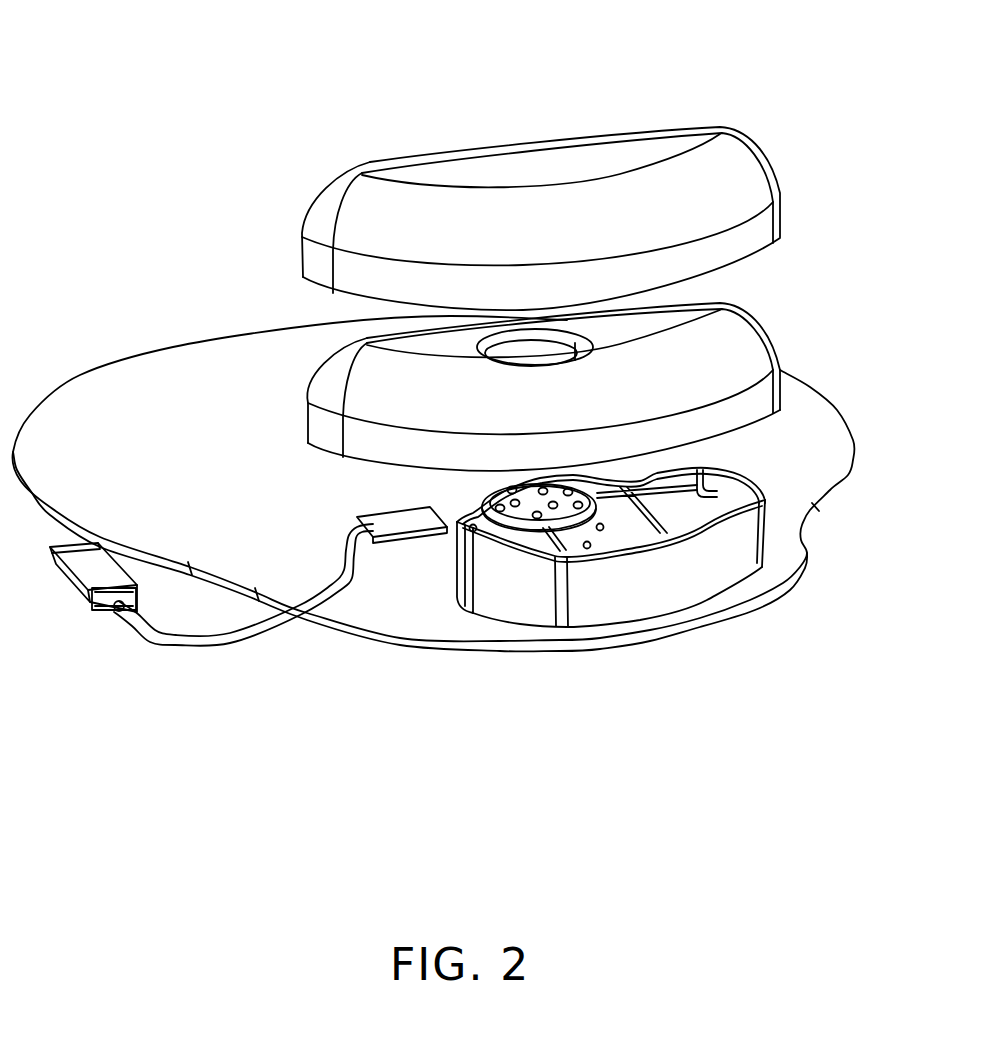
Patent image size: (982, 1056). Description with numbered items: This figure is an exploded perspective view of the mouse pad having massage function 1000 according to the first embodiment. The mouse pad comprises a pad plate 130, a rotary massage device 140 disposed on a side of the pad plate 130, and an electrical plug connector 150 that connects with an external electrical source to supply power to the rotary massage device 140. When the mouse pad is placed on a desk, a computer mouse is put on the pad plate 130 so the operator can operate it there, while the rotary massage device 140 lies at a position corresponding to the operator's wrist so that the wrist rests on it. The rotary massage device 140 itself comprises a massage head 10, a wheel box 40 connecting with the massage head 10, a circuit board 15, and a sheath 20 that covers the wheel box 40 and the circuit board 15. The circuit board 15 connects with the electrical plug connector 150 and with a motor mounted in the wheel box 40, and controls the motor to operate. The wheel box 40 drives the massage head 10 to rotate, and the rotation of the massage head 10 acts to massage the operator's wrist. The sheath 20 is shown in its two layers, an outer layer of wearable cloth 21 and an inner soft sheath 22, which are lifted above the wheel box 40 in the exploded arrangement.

The mouse pad having massage function 1000 is at (193, 81).
The pad plate 130 is at (185, 360).
The rotary massage device 140 is at (772, 285).
The sheath 20 is at (207, 173).
The outer layer of wearable cloth 21 is at (338, 195).
The inner soft sheath 22 is at (330, 378).
The wheel box 40 is at (657, 582).
The massage head 10 is at (527, 507).
The circuit board 15 is at (400, 527).
The electrical plug connector 150 is at (103, 570).